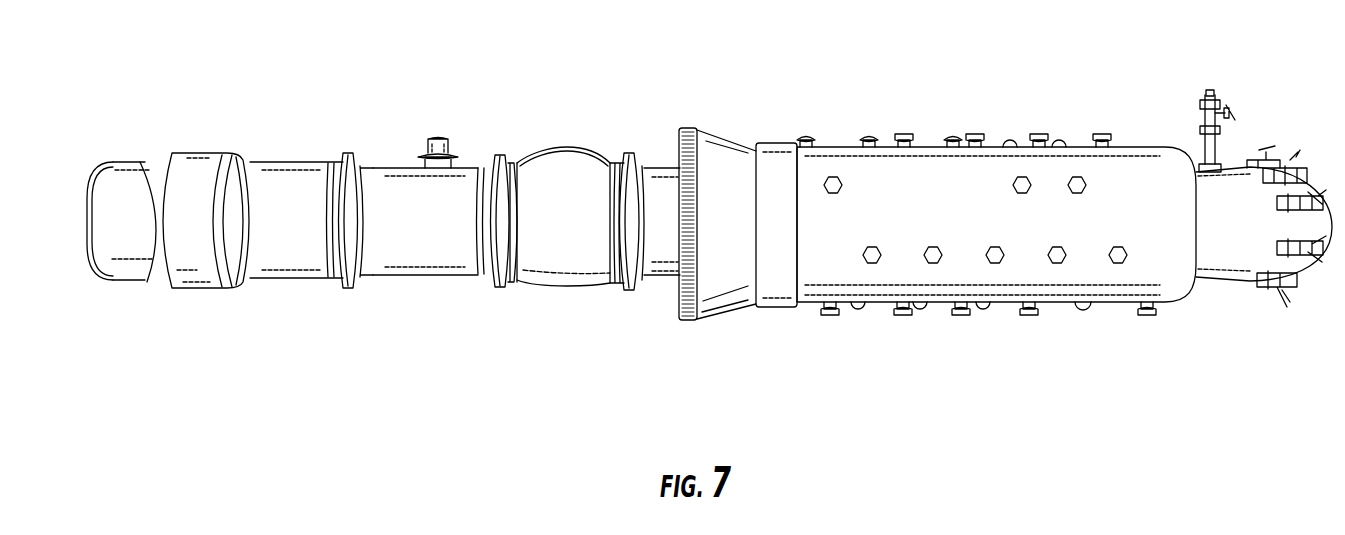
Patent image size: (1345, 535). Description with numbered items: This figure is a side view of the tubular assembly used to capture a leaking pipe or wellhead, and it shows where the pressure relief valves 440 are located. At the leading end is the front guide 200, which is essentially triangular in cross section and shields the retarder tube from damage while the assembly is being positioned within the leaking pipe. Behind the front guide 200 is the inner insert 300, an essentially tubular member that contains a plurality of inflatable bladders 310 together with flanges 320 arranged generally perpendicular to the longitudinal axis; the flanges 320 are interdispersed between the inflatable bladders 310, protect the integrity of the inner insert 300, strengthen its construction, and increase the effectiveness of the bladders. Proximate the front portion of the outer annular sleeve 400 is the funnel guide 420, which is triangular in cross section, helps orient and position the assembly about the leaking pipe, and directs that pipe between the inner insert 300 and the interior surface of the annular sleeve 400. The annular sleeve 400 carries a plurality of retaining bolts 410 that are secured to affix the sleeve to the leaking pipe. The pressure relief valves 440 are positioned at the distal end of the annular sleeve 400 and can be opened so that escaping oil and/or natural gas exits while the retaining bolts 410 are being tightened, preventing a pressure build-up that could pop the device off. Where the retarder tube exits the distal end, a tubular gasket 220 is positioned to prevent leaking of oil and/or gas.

The front guide 200 is at (160, 272).
The inner insert 300 is at (447, 258).
The inflatable bladders 310 is at (553, 288).
The flanges 320 is at (640, 288).
The funnel guide 420 is at (712, 162).
The outer annular sleeve 400 is at (883, 286).
The retaining bolts 410 is at (1038, 137).
The tubular gasket 220 is at (1192, 295).
The pressure relief valves 440 is at (1217, 97).